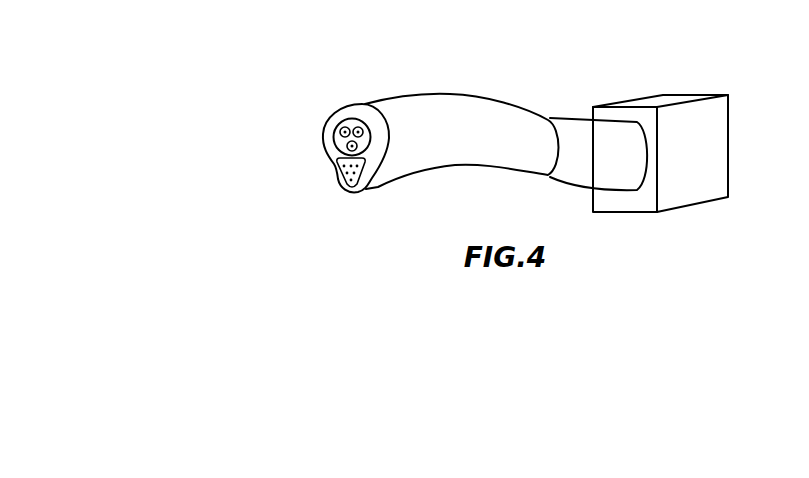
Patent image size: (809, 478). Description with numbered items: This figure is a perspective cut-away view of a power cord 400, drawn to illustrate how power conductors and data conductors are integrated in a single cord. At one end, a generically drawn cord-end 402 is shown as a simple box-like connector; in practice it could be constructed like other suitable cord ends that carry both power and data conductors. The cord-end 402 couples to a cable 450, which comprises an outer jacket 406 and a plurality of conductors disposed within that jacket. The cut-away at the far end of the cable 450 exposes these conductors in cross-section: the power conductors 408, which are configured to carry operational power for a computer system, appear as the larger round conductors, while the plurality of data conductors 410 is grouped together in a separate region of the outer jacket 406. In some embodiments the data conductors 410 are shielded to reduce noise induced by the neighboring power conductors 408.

The power cord 400 is at (537, 91).
The cord-end 402 is at (695, 92).
The outer jacket 406 is at (480, 147).
The power conductors 408 is at (353, 133).
The data conductors 410 is at (342, 165).
The cable 450 is at (377, 100).